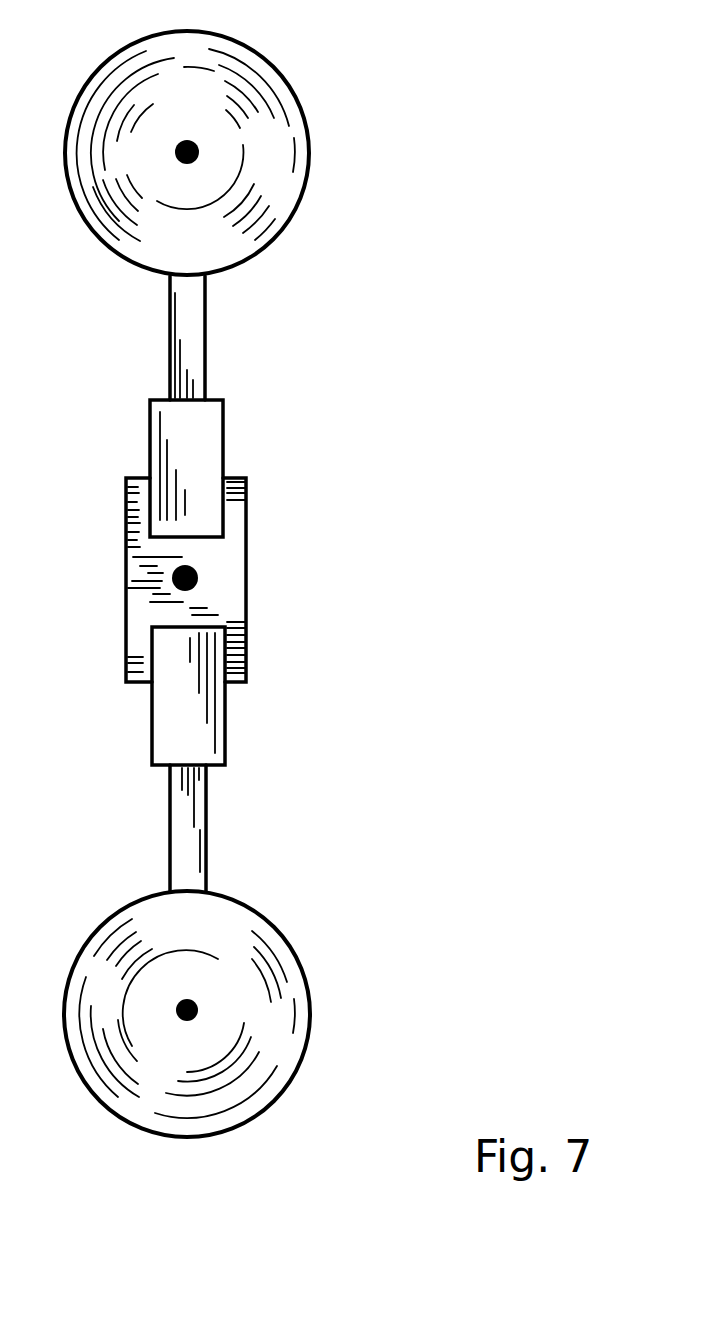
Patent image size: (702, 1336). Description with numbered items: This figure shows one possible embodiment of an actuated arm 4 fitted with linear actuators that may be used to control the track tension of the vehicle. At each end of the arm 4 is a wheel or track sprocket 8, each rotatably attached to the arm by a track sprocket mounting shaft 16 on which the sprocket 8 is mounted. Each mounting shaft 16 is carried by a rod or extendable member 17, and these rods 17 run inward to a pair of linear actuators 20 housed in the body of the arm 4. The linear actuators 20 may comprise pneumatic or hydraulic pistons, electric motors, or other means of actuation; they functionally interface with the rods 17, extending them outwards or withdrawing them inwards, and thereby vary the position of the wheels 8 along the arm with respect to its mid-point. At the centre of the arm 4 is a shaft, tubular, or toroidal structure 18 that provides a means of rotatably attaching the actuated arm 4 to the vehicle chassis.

The actuated arm 4 is at (140, 628).
The wheels or track sprockets 8 is at (137, 247).
The track sprocket mounting shafts 16 is at (198, 152).
The rods or extendable members 17 is at (195, 299).
The shaft, tubular, or toroidal structure 18 is at (198, 575).
The linear actuators 20 is at (187, 448).